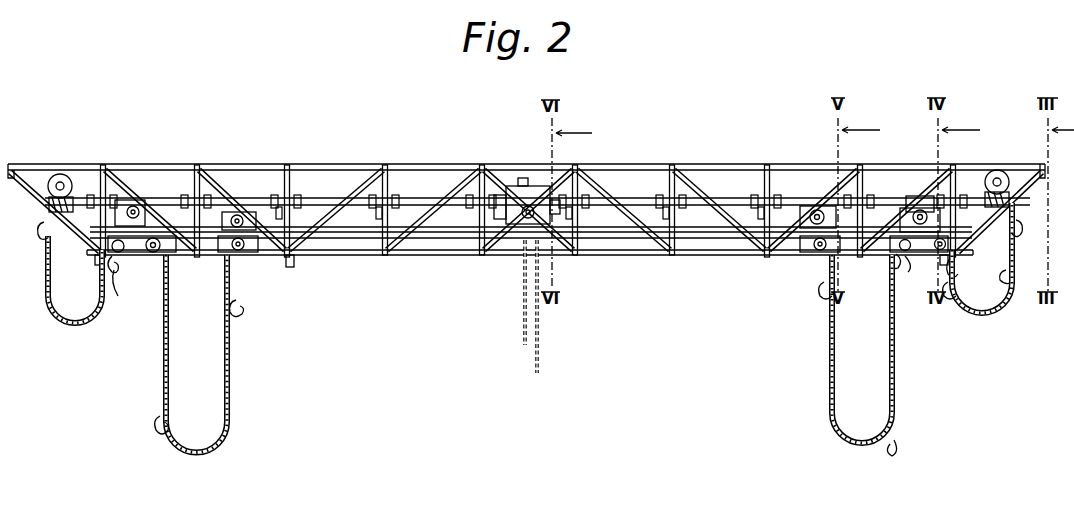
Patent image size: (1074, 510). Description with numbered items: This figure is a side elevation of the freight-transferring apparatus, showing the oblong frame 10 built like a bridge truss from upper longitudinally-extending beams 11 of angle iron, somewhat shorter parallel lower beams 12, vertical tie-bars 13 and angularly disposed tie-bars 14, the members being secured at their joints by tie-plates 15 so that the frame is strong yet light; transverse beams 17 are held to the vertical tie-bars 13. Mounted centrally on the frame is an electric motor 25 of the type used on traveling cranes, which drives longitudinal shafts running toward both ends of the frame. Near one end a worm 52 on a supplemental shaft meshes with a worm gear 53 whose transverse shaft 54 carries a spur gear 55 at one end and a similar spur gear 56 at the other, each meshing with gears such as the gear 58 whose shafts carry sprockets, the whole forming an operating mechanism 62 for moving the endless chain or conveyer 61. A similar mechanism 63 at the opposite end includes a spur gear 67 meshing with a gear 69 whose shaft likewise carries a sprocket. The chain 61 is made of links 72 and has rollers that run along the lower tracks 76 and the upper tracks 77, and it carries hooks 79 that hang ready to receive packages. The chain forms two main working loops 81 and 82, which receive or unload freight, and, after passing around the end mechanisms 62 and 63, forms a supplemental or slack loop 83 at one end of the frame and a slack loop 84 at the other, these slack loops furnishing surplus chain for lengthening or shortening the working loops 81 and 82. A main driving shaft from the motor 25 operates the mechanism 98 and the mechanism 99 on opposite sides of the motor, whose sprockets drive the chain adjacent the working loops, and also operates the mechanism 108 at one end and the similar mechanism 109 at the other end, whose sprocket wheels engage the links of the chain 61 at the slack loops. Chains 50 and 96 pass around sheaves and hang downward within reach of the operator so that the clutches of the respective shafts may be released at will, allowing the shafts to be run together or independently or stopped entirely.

The frame 10 is at (308, 170).
The upper longitudinally-extending beams 11 is at (34, 176).
The lower beams 12 is at (263, 252).
The vertical tie-bars 13 is at (192, 190).
The angularly disposed tie-bars 14 is at (368, 190).
The tie-plates 15 is at (113, 170).
The transverse beams 17 is at (217, 172).
The motor 25 is at (528, 190).
The chain or cable 50 is at (523, 304).
The worm 52 is at (925, 192).
The worm gear 53 is at (910, 198).
The shaft 54 is at (922, 250).
The spur gear 55 is at (902, 216).
The spur gear 56 is at (906, 266).
The gear 58 is at (894, 258).
The endless chain or conveyer 61 is at (896, 362).
The operating mechanism 62 is at (952, 262).
The mechanism 63 is at (138, 250).
The spur gear 67 is at (152, 224).
The gear 69 is at (152, 262).
The links 72 is at (232, 346).
The lower tracks 76 is at (360, 238).
The upper tracks 77 is at (424, 170).
The hooks 79 is at (238, 312).
The main working loop 81 is at (213, 353).
The main working loop 82 is at (838, 355).
The supplemental or slack loop 83 is at (70, 286).
The supplemental or slack loop 84 is at (983, 276).
The chain or cable 96 is at (539, 354).
The mechanism 98 is at (260, 244).
The mechanism 99 is at (822, 252).
The mechanism 108 is at (60, 176).
The mechanism 109 is at (990, 172).